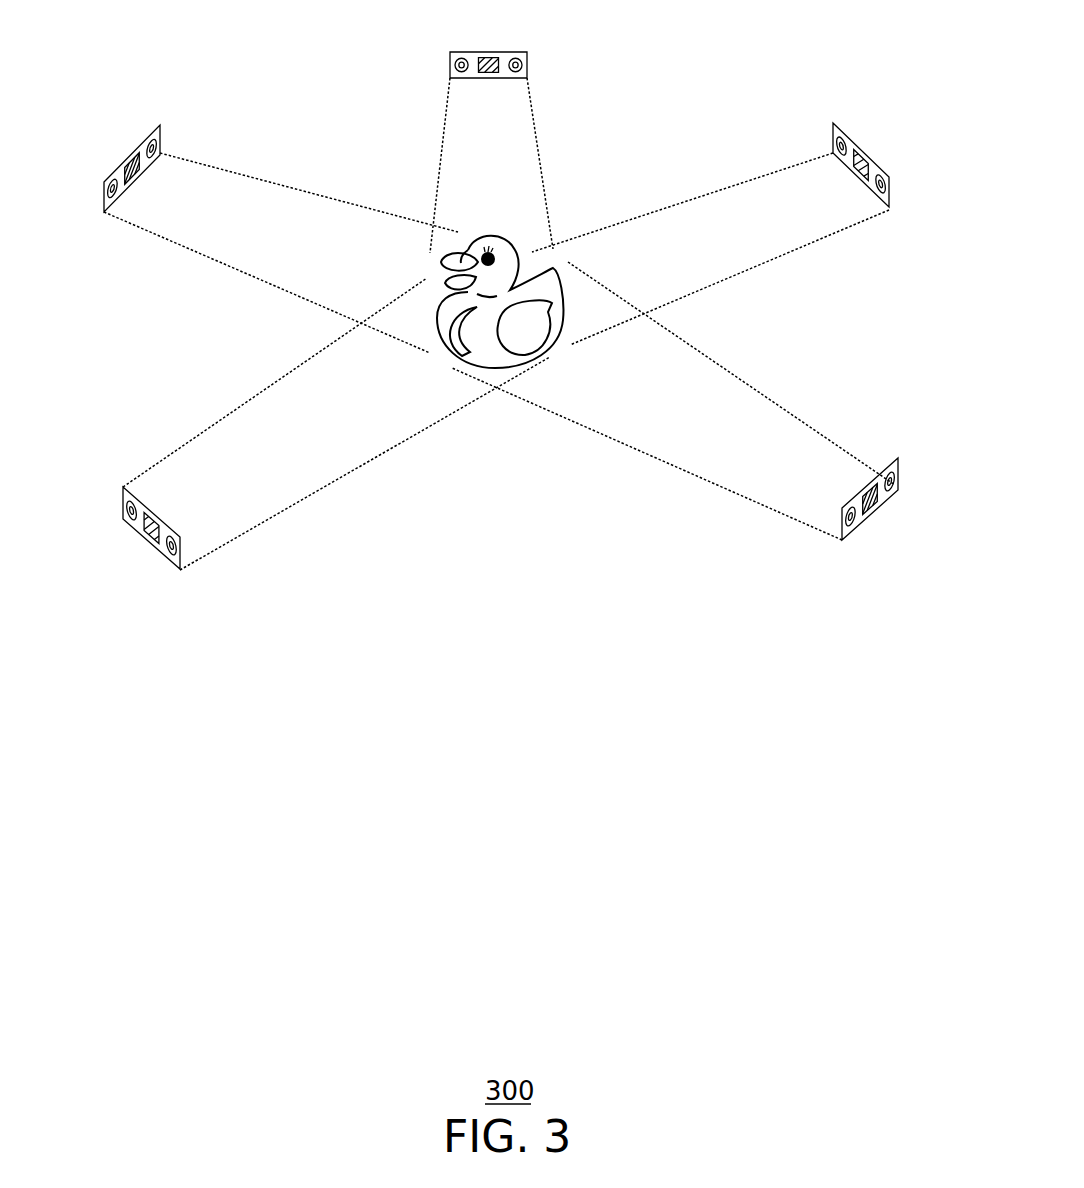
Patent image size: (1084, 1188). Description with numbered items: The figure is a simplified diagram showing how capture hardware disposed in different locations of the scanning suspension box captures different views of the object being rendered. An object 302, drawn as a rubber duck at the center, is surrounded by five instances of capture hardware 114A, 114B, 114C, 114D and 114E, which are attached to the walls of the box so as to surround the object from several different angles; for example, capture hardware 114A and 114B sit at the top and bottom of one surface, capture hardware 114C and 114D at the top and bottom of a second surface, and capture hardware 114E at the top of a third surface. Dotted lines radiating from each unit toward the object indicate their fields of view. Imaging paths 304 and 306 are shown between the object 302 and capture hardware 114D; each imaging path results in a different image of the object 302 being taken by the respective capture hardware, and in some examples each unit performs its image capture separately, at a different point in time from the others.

The capture hardware 114A is at (127, 155).
The capture hardware 114B is at (129, 486).
The capture hardware 114C is at (860, 150).
The capture hardware 114D is at (863, 527).
The capture hardware 114E is at (492, 52).
The object 302 is at (495, 366).
The imaging path 304 is at (790, 415).
The imaging path 306 is at (732, 502).